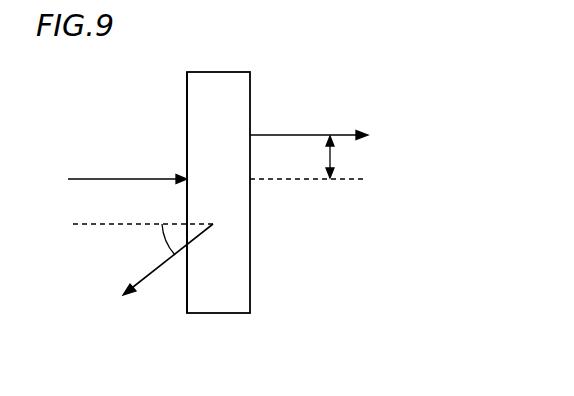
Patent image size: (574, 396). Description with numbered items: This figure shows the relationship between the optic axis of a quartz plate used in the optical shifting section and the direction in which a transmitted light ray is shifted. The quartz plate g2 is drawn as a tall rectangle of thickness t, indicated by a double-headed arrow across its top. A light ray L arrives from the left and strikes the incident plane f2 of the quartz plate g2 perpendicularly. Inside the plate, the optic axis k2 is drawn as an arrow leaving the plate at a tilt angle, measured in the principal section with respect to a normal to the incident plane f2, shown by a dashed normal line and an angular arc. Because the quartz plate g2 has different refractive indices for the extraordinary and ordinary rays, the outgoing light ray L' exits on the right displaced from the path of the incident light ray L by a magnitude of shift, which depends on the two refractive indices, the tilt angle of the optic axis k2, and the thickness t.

The quartz plate g2 is at (252, 103).
The thickness t is at (247, 54).
The incident plane f2 is at (187, 118).
The light ray L is at (127, 152).
The outgoing light ray L' is at (309, 111).
The optic axis k2 is at (150, 277).